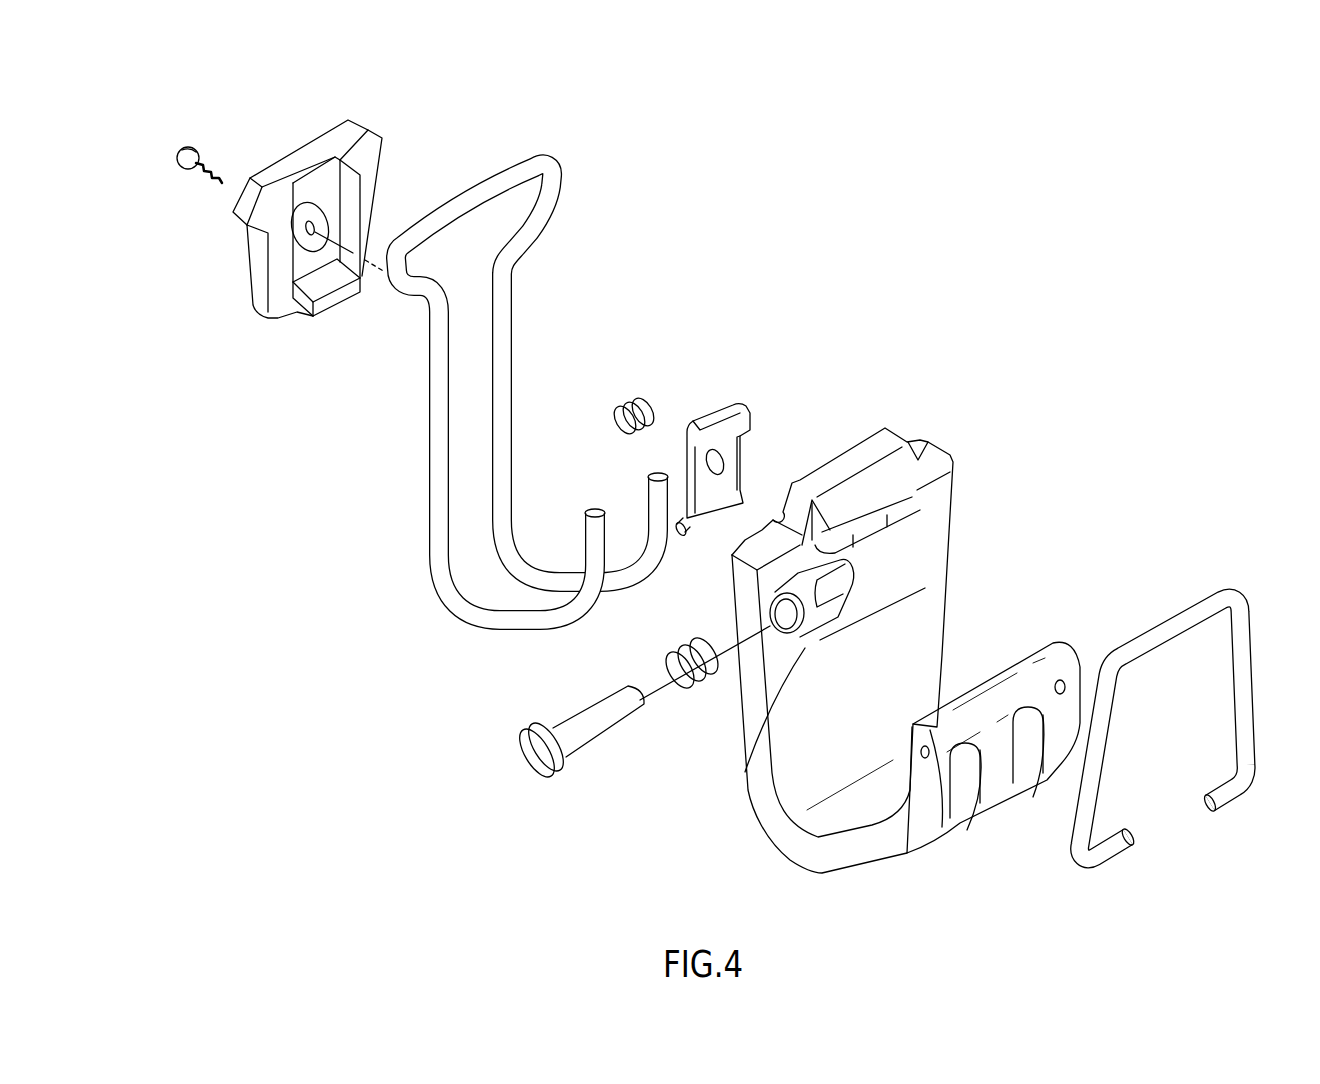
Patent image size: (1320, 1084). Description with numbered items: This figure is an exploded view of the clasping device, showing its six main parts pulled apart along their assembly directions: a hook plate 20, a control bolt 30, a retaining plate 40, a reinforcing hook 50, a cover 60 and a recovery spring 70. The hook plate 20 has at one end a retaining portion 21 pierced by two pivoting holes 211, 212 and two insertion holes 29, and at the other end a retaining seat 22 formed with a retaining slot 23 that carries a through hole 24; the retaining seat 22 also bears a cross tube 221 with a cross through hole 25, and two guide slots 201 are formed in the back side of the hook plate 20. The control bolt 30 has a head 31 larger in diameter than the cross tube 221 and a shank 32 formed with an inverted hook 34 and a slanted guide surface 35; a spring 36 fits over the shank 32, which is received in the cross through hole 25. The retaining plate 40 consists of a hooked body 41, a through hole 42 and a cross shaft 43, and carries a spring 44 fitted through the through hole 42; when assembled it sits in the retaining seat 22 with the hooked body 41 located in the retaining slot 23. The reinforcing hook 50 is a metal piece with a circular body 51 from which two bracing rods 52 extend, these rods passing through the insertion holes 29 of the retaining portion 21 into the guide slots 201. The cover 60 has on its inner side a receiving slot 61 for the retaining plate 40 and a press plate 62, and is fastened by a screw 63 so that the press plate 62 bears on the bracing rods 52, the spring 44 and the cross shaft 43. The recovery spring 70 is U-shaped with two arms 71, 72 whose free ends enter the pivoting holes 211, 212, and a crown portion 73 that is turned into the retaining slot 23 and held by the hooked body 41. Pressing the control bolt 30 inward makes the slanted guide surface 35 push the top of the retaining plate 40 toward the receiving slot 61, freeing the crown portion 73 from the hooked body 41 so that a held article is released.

The hook plate 20 is at (895, 631).
The retaining portion 21 is at (985, 800).
The retaining seat 22 is at (900, 589).
The retaining slot 23 is at (912, 507).
The through hole 24 is at (853, 537).
The cross through hole 25 is at (780, 625).
The insertion holes 29 is at (1028, 730).
The guide slots 201 is at (775, 522).
The pivoting hole 211 is at (925, 758).
The pivoting hole 212 is at (1063, 682).
The cross tube 221 is at (768, 640).
The control bolt 30 is at (563, 737).
The head 31 is at (542, 764).
The shank 32 is at (597, 743).
The inverted hook 34 is at (580, 708).
The slanted guide surface 35 is at (608, 686).
The spring 36 is at (670, 654).
The retaining plate 40 is at (708, 426).
The hooked body 41 is at (748, 410).
The through hole 42 is at (723, 460).
The cross shaft 43 is at (683, 537).
The spring 44 is at (636, 406).
The reinforcing hook 50 is at (531, 365).
The circular body 51 is at (551, 156).
The bracing rods 52 is at (513, 402).
The cover 60 is at (282, 277).
The receiving slot 61 is at (325, 183).
The press plate 62 is at (338, 302).
The screw 63 is at (182, 168).
The recovery spring 70 is at (1183, 678).
The arm 71 is at (1123, 847).
The arm 72 is at (1222, 810).
The crown portion 73 is at (1170, 645).